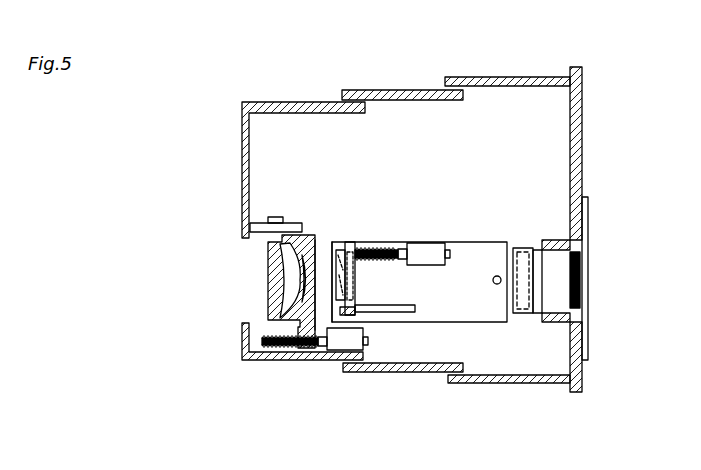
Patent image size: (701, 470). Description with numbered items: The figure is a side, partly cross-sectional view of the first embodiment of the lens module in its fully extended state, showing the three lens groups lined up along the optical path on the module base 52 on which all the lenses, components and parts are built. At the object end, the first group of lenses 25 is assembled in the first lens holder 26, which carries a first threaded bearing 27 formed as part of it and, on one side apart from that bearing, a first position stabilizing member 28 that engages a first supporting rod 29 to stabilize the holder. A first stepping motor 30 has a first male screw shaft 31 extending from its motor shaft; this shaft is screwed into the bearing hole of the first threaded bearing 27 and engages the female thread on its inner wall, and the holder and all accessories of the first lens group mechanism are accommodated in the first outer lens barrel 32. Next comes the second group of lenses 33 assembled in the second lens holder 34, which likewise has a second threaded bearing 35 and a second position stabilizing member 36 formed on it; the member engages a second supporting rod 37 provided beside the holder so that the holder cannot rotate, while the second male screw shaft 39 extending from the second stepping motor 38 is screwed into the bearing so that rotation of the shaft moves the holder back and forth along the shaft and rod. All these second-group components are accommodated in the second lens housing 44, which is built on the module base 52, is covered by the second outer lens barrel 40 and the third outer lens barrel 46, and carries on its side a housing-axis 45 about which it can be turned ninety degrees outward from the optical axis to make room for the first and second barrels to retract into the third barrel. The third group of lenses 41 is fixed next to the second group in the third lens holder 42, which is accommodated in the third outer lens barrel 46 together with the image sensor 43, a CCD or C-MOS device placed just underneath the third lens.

The first group of lenses 25 is at (279, 262).
The first lens holder 26 is at (316, 240).
The first threaded bearing 27 is at (300, 362).
The first position stabilizing member 28 is at (277, 217).
The first supporting rod 29 is at (262, 229).
The first stepping motor 30 is at (345, 348).
The first male screw shaft 31 is at (258, 362).
The first outer lens barrel 32 is at (242, 102).
The second group of lenses 33 is at (330, 246).
The second lens holder 34 is at (377, 252).
The second threaded bearing 35 is at (357, 250).
The second position stabilizing member 36 is at (357, 318).
The second supporting rod 37 is at (400, 313).
The second stepping motor 38 is at (432, 246).
The second male screw shaft 39 is at (396, 252).
The second outer lens barrel 40 is at (365, 92).
The third group of lenses 41 is at (517, 247).
The third lens holder 42 is at (521, 315).
The image sensor 43 is at (568, 276).
The second lens housing 44 is at (488, 302).
The housing-axis 45 is at (497, 275).
The third outer lens barrel 46 is at (473, 78).
The module base 52 is at (582, 115).